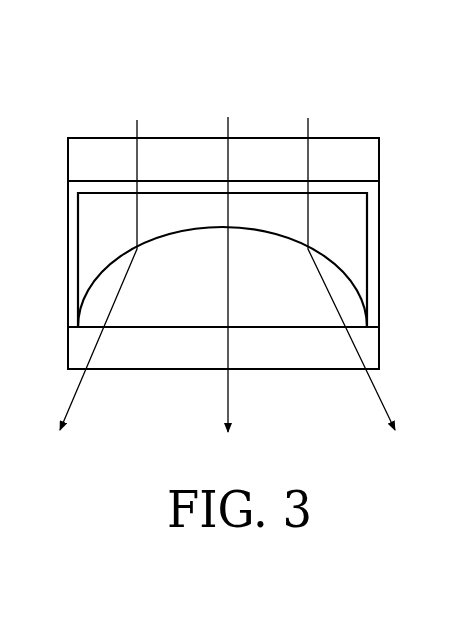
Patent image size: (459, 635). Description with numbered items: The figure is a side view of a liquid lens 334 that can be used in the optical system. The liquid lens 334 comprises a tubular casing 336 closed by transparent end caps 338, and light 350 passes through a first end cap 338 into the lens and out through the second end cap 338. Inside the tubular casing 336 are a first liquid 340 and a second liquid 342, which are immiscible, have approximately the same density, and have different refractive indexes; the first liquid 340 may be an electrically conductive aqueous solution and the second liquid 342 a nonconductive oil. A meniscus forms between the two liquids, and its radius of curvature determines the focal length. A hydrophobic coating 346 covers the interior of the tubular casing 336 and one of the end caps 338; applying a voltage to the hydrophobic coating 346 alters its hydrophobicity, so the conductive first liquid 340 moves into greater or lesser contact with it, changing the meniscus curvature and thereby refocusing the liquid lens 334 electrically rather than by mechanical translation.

The liquid lens 334 is at (86, 88).
The tubular casing 336 is at (68, 252).
The transparent end caps 338 is at (67, 163).
The first liquid 340 is at (264, 270).
The second liquid 342 is at (264, 211).
The hydrophobic coating 346 is at (72, 317).
The light 350 is at (227, 130).